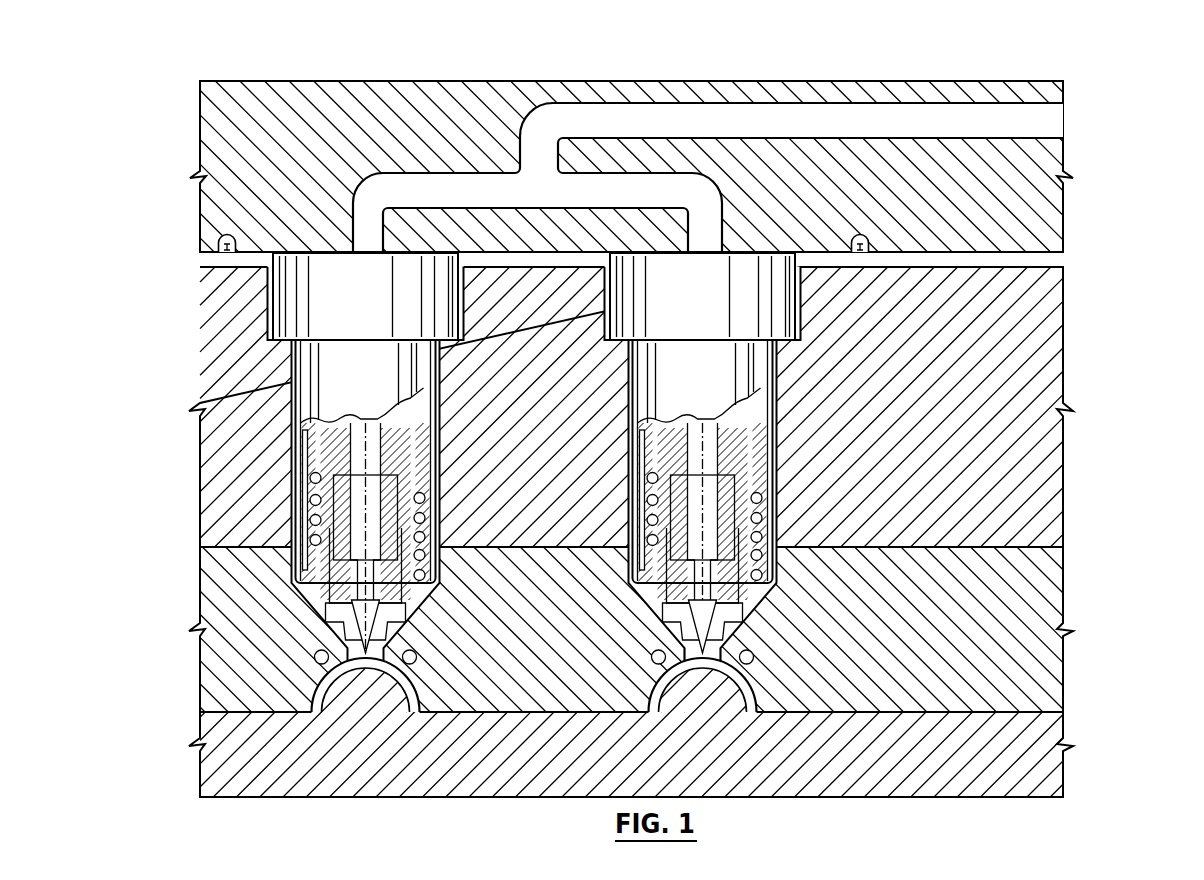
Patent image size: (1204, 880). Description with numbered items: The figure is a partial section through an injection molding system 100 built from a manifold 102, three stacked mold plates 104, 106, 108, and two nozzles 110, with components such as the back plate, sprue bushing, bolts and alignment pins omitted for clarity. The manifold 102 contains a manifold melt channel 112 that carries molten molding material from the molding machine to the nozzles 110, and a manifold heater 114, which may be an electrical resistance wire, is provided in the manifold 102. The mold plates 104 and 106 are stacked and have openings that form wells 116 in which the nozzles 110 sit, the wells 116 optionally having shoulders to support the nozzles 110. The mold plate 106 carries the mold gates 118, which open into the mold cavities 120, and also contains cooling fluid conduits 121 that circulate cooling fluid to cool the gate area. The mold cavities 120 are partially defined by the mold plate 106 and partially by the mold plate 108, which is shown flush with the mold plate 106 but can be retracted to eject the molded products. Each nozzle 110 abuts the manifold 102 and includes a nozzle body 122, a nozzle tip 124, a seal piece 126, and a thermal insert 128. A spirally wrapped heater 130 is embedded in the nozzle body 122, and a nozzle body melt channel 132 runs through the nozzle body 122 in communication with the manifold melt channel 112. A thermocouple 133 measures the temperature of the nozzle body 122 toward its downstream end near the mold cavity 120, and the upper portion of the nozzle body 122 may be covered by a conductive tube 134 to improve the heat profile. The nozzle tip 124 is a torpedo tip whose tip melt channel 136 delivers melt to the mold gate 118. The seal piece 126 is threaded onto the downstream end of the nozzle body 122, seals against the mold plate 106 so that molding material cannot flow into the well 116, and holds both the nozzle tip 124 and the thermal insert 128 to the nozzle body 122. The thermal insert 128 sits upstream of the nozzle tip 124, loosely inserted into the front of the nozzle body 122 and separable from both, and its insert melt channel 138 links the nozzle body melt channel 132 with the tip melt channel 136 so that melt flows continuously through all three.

The injection molding system 100 is at (532, 58).
The manifold 102 is at (1040, 204).
The mold plate 104 is at (1040, 362).
The mold plate 106 is at (1040, 596).
The mold plate 108 is at (1040, 726).
The nozzle 110 is at (398, 378).
The manifold melt channel 112 is at (701, 131).
The manifold heater 114 is at (866, 236).
The well 116 is at (692, 470).
The mold gate 118 is at (364, 680).
The mold cavity 120 is at (323, 694).
The cooling fluid conduit 121 is at (758, 660).
The nozzle body 122 is at (739, 338).
The nozzle tip 124 is at (774, 621).
The seal piece 126 is at (772, 637).
The thermal insert 128 is at (772, 525).
The heater 130 is at (782, 560).
The nozzle body melt channel 132 is at (776, 517).
The thermocouple 133 is at (673, 464).
The conductive tube 134 is at (779, 484).
The tip melt channel 136 is at (757, 598).
The insert melt channel 138 is at (739, 500).